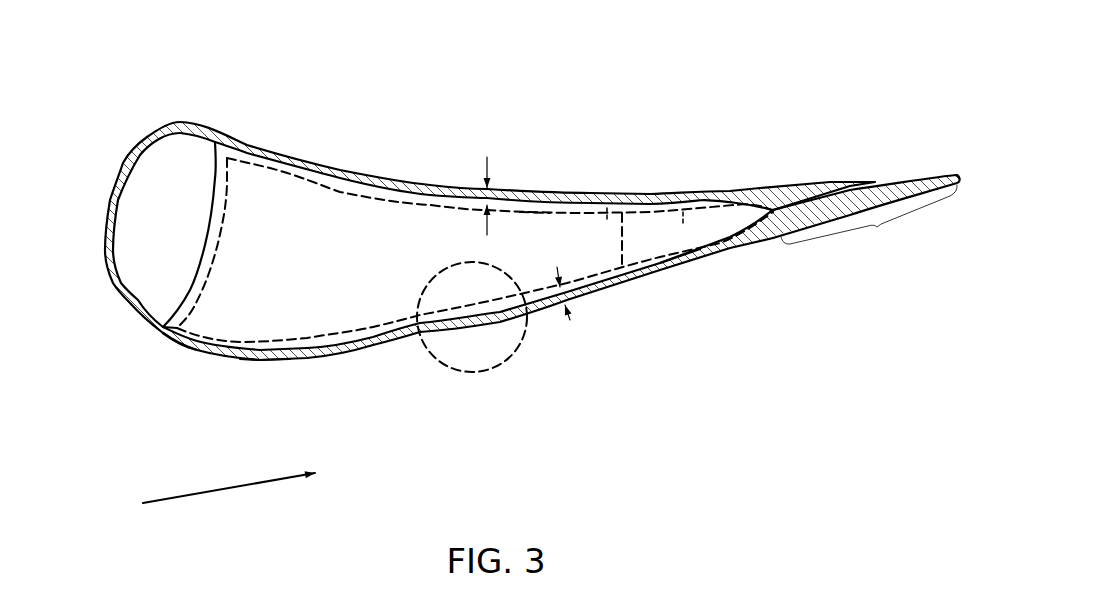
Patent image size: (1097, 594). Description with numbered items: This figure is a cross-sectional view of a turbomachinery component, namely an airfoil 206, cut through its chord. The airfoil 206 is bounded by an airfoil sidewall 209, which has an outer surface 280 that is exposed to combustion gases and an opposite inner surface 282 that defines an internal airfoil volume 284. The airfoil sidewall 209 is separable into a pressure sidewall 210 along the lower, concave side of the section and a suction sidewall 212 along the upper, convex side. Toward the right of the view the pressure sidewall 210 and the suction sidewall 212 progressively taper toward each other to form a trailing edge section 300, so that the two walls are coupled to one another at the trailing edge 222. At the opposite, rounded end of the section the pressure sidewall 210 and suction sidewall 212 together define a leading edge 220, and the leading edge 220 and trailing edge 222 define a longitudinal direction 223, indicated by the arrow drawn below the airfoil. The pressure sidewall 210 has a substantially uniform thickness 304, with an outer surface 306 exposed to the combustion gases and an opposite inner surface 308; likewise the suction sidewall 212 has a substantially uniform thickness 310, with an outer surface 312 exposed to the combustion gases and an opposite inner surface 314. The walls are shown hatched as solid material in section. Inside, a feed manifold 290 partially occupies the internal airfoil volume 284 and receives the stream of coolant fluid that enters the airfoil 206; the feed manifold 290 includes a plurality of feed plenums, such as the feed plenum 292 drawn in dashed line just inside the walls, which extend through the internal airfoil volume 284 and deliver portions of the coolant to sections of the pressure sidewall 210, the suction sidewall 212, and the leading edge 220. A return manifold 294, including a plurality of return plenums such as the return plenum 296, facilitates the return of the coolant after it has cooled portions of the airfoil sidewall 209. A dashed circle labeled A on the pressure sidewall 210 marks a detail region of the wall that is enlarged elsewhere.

The airfoil 206 is at (580, 97).
The suction sidewall 212 is at (433, 187).
The trailing edge 222 is at (838, 180).
The trailing edge section 300 is at (877, 228).
The pressure sidewall 210 is at (368, 350).
The leading edge 220 is at (117, 178).
The feed manifold 290 is at (127, 223).
The internal airfoil volume 284 is at (247, 212).
The feed plenum 292 is at (270, 192).
The inner surface 282 is at (170, 323).
The outer surface 280 is at (180, 350).
The airfoil sidewall 209 is at (259, 360).
The thickness 310 is at (487, 156).
The outer surface 312 is at (532, 212).
The inner surface 314 is at (608, 206).
The return plenum 296 is at (612, 198).
The return manifold 294 is at (683, 208).
The inner surface 308 is at (630, 275).
The outer surface 306 is at (607, 273).
The thickness 304 is at (570, 320).
The detail region A is at (473, 367).
The longitudinal direction 223 is at (207, 490).